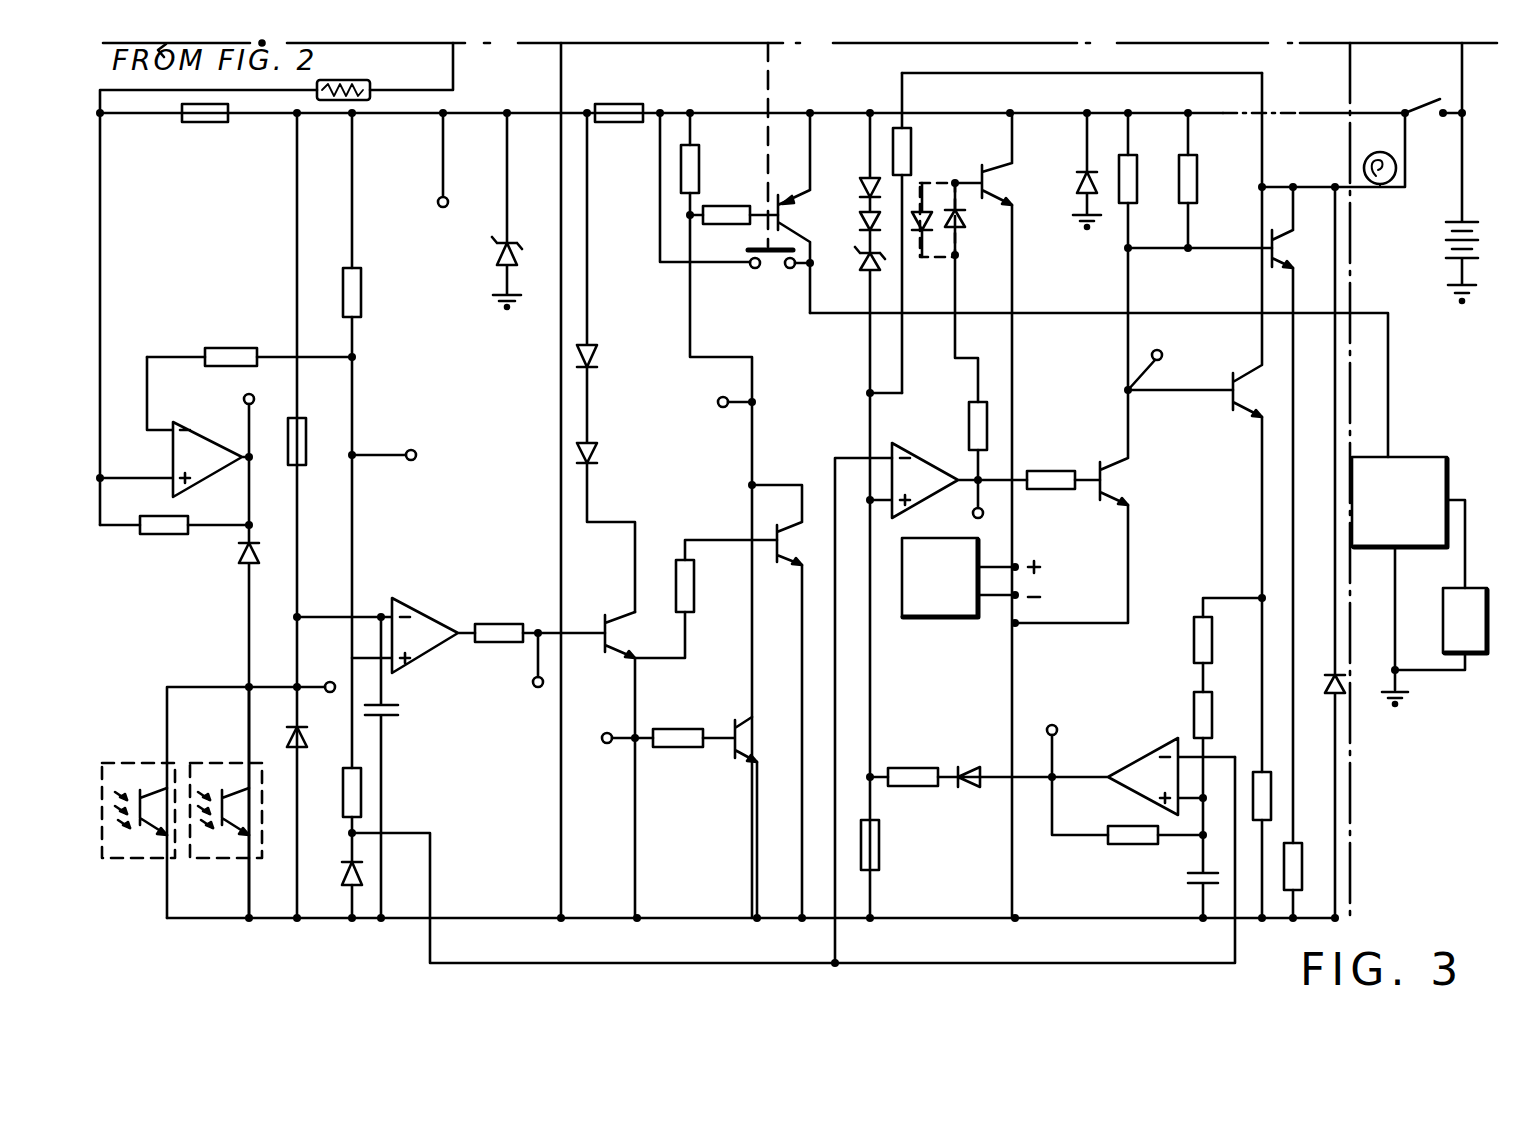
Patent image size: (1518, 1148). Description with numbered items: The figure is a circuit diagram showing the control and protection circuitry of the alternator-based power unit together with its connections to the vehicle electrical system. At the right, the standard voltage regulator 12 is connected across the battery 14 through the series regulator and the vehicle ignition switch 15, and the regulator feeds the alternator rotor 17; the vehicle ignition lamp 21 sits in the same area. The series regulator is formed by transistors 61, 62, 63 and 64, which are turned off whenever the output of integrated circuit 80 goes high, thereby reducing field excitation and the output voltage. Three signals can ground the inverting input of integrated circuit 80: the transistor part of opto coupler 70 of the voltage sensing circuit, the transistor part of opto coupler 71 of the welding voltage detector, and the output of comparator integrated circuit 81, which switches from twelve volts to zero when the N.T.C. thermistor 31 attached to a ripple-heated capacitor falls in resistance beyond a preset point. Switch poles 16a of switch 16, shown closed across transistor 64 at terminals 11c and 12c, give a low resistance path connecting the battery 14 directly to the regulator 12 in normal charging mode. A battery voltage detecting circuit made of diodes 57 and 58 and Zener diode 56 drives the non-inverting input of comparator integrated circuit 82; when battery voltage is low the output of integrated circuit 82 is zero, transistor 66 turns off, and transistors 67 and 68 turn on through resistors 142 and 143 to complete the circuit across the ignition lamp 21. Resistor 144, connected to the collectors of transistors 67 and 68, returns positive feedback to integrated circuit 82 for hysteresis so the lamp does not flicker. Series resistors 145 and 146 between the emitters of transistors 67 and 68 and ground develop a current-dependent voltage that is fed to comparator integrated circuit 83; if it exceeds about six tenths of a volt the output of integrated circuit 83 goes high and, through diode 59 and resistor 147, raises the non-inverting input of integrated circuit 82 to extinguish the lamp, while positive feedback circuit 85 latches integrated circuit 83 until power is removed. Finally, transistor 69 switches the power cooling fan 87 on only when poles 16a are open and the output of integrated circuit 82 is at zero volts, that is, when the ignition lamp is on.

The voltage regulator 12 is at (1428, 477).
The battery 14 is at (1440, 263).
The vehicle ignition switch 15 is at (1431, 89).
The switch 16 is at (758, 86).
The switch poles 16a is at (749, 240).
The alternator rotor 17 is at (1442, 638).
The vehicle ignition lamp 21 is at (1398, 158).
The N.T.C. thermistor 31 is at (368, 100).
The terminal 11c is at (743, 281).
The terminal 12c is at (788, 275).
The Zener diode 56 is at (866, 272).
The diode 57 is at (860, 186).
The diode 58 is at (862, 222).
The diode 59 is at (1004, 762).
The transistor 61 is at (644, 649).
The transistor 62 is at (768, 746).
The transistor 63 is at (812, 552).
The transistor 64 is at (812, 226).
The transistor 66 is at (1158, 492).
The transistor 67 is at (1272, 399).
The transistor 68 is at (1309, 262).
The transistor 69 is at (1016, 194).
The opto coupler 70 is at (148, 758).
The opto coupler 71 is at (234, 758).
The integrated circuit 80 is at (452, 580).
The comparator integrated circuit 81 is at (204, 395).
The comparator integrated circuit 82 is at (935, 428).
The comparator integrated circuit 83 is at (1136, 722).
The positive feedback circuit 85 is at (1134, 846).
The power cooling fan 87 is at (958, 618).
The resistor 142 is at (1154, 144).
The resistor 143 is at (1197, 193).
The resistor 144 is at (911, 140).
The series resistor 145 is at (1256, 771).
The series resistor 146 is at (1295, 848).
The resistor 147 is at (922, 750).